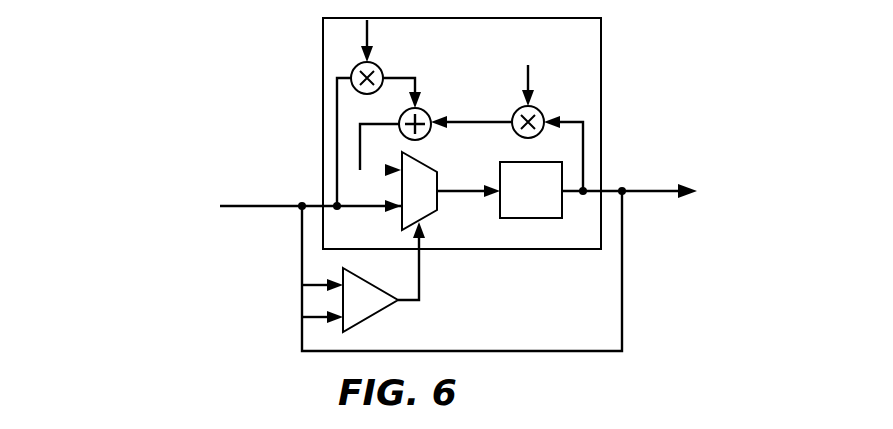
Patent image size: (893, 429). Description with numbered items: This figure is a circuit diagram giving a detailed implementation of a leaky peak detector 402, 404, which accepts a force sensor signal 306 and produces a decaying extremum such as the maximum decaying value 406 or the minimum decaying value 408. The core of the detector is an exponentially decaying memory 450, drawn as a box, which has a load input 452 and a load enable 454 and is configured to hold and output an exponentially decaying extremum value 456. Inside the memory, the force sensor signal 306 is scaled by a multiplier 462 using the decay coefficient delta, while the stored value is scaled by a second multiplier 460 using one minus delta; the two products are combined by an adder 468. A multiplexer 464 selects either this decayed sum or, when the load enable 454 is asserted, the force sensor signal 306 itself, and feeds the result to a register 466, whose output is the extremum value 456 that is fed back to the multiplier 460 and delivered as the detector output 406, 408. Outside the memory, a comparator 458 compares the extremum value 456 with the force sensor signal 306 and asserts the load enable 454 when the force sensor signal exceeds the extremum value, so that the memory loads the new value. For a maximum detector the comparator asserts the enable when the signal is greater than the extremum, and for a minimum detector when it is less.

The first leaky peak detector 402 is at (330, 131).
The second leaky peak detector 404 is at (212, 40).
The force sensor signal 306 is at (232, 205).
The maximum decaying value 406 is at (734, 170).
The minimum decaying value 408 is at (660, 189).
The exponentially decaying memory 450 is at (323, 97).
The load input 452 is at (322, 205).
The load enable 454 is at (420, 252).
The exponentially decaying extremum value 456 is at (602, 188).
The comparator 458 is at (387, 308).
The multiplier 460 is at (540, 108).
The multiplier 462 is at (380, 67).
The multiplexer 464 is at (422, 160).
The register 466 is at (533, 218).
The adder 468 is at (424, 110).